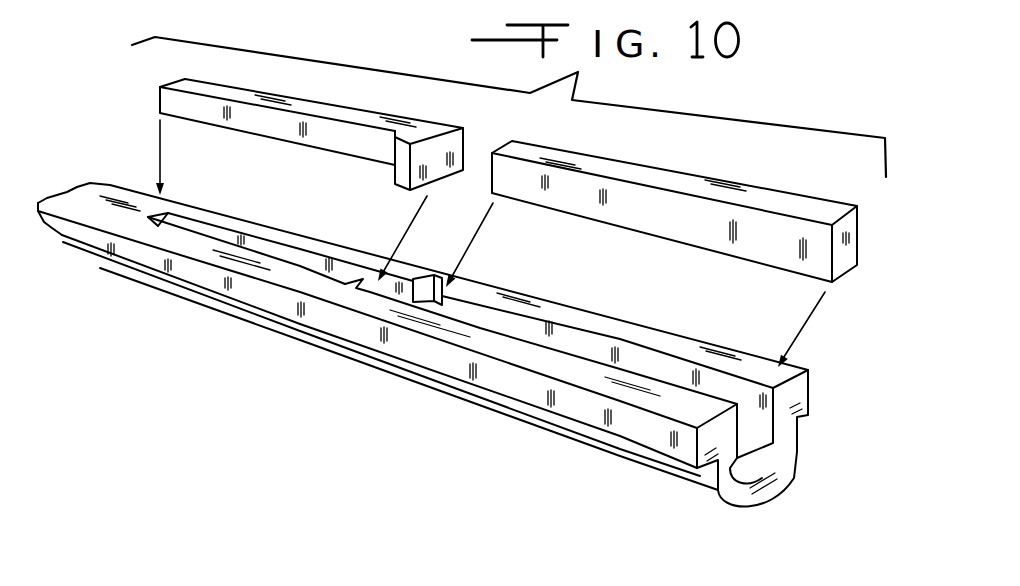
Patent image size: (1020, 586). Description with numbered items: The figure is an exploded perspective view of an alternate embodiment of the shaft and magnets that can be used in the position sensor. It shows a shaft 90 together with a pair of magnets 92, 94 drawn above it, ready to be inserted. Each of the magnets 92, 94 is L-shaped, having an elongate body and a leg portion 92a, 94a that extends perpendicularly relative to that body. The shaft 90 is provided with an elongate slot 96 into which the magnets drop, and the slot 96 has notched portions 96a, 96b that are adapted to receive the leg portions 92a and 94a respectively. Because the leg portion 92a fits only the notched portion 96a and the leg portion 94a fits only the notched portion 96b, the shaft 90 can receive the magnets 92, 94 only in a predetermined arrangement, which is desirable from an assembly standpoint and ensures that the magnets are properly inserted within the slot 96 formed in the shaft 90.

The shaft 90 is at (240, 324).
The magnet 92 is at (277, 123).
The leg portion 92a is at (393, 160).
The magnet 94 is at (651, 245).
The leg portion 94a is at (572, 142).
The elongate slot 96 is at (267, 240).
The notched portion 96a is at (368, 303).
The notched portion 96b is at (450, 283).